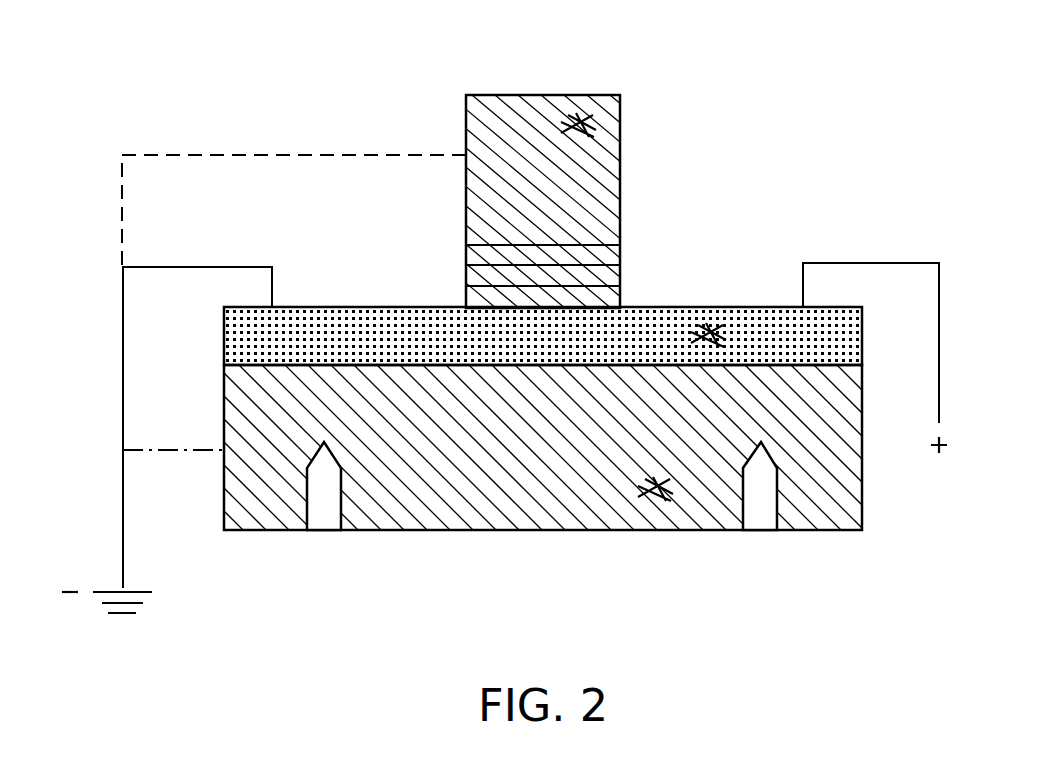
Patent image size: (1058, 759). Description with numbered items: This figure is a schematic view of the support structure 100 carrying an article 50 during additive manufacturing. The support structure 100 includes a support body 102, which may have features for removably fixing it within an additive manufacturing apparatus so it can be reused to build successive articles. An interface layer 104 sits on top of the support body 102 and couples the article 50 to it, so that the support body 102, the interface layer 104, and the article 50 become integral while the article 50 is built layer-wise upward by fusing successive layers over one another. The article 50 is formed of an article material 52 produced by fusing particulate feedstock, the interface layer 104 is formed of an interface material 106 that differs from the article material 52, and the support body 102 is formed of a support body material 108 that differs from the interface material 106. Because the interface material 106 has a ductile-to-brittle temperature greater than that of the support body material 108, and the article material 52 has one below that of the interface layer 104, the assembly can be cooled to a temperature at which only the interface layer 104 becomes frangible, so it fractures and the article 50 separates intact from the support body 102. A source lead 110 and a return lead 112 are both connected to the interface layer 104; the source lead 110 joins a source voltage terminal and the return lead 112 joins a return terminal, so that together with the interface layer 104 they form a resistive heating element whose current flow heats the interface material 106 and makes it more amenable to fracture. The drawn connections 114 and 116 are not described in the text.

The support structure 100 is at (312, 620).
The support body 102 is at (528, 530).
The interface layer 104 is at (655, 325).
The interface material 106 is at (708, 333).
The support body material 108 is at (655, 500).
The article 50 is at (516, 108).
The article material 52 is at (577, 113).
The source lead 110 is at (871, 263).
The return lead 112 is at (123, 404).
The contact connection 114 is at (173, 450).
The dashed connection to probe 116 is at (291, 155).